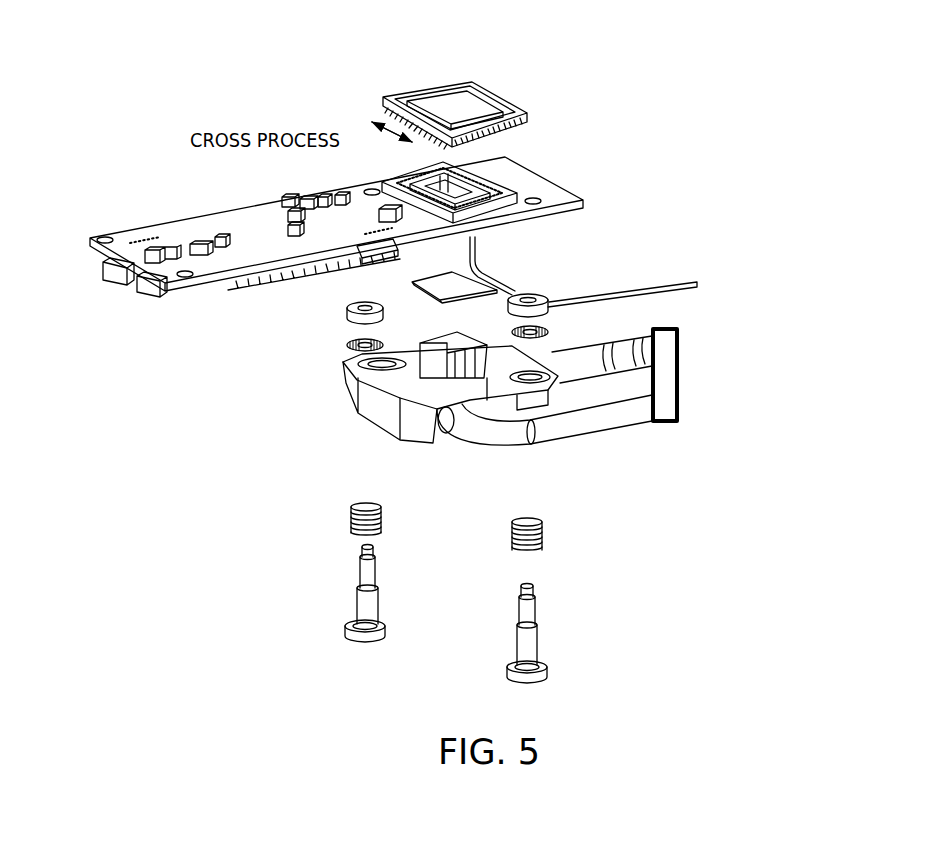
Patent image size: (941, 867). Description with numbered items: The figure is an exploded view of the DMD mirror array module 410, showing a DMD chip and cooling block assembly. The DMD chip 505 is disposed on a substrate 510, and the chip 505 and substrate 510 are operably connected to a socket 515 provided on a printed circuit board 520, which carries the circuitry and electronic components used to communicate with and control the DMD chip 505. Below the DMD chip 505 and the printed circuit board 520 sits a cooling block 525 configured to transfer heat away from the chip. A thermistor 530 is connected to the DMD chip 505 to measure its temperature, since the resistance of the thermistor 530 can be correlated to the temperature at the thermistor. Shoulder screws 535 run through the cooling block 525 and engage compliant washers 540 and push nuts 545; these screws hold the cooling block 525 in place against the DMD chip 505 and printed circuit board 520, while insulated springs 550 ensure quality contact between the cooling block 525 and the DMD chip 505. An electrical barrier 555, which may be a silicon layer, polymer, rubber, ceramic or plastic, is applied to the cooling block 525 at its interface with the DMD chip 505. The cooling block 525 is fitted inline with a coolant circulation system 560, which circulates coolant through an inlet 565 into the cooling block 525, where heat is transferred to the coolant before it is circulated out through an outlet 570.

The DMD mirror array module 410 is at (840, 112).
The DMD chip 505 is at (530, 113).
The substrate 510 is at (470, 82).
The socket 515 is at (512, 186).
The printed circuit board 520 is at (145, 219).
The cooling block 525 is at (347, 394).
The thermistor 530 is at (483, 238).
The shoulder screws 535 is at (344, 640).
The compliant washers 540 is at (340, 337).
The push nuts 545 is at (340, 306).
The insulated springs 550 is at (346, 515).
The electrical barrier 555 is at (417, 294).
The coolant circulation system 560 is at (680, 353).
The inlet 565 is at (580, 385).
The outlet 570 is at (633, 425).